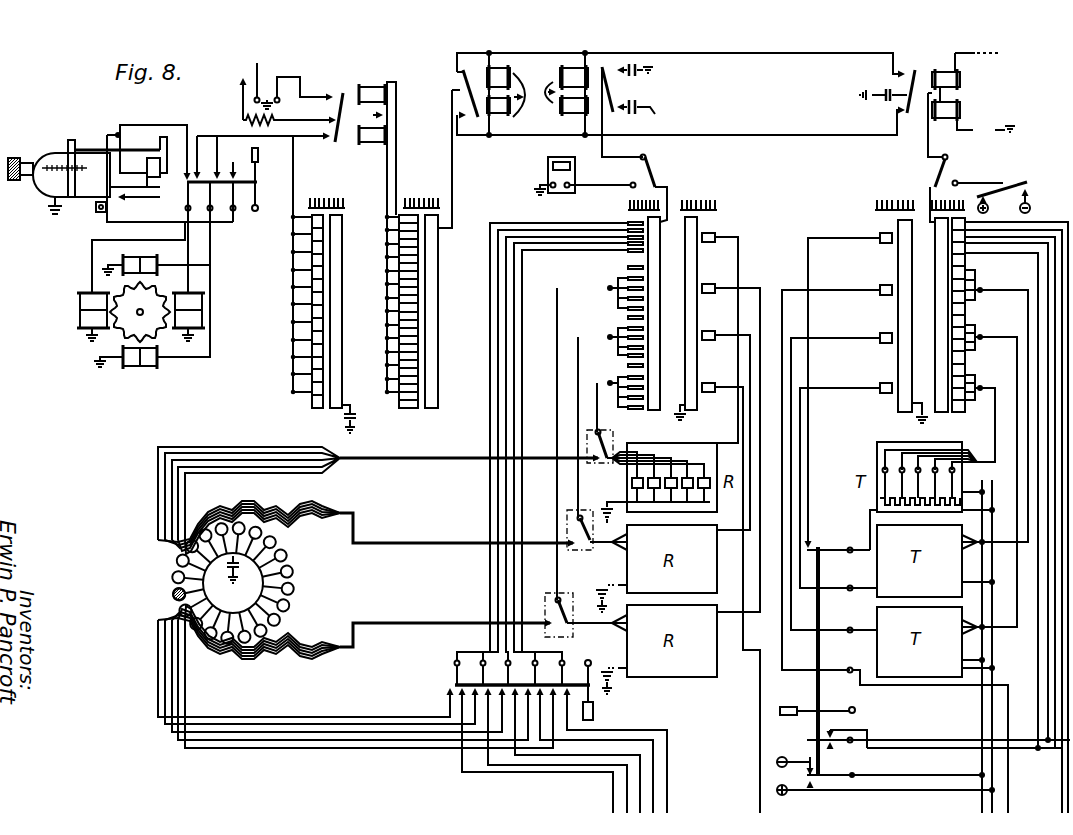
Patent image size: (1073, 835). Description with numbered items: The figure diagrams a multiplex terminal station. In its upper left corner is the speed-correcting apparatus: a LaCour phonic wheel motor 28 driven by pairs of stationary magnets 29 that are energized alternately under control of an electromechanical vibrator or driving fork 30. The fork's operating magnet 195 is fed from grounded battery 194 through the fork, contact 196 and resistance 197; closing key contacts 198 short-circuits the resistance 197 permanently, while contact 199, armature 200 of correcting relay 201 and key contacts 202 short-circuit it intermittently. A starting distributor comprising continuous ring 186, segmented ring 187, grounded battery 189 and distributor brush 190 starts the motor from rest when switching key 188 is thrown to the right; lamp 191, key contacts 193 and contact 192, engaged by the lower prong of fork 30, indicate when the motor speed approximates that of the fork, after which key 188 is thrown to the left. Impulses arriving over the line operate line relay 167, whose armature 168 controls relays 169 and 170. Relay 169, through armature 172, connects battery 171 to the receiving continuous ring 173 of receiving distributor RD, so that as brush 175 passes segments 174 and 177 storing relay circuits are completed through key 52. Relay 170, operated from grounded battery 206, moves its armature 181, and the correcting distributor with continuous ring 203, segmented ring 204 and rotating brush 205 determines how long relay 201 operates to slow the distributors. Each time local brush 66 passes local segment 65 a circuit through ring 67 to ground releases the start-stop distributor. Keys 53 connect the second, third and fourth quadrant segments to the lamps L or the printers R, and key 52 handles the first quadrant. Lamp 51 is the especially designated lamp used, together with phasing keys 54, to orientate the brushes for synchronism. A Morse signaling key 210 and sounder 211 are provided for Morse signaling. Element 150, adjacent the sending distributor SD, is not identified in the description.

The driving fork 30 is at (57, 151).
The contact 192 is at (117, 134).
The contact 196 is at (155, 137).
The resistance 197 is at (245, 121).
The key contacts 198 is at (245, 78).
The key contacts 202 is at (280, 66).
The contact 199 is at (343, 92).
The armature 200 is at (336, 118).
The correcting relay 201 is at (386, 135).
The armature 181 is at (462, 80).
The relay 169 is at (548, 86).
The relay 170 is at (524, 108).
The battery 171 is at (645, 70).
The armature 172 is at (614, 94).
The armature 168 is at (912, 74).
The line relay 167 is at (961, 103).
The grounded battery 206 is at (882, 102).
The sending distributor brushes 150 is at (957, 196).
The Morse signaling key 210 is at (1028, 183).
The sounder 211 is at (548, 168).
The brush 175 is at (653, 182).
The local distributor brush 66 is at (697, 200).
The segment 174 is at (628, 222).
The segment 177 is at (618, 262).
The receiving continuous ring 173 is at (655, 345).
The ring 67 is at (686, 290).
The local segment 65 is at (705, 284).
The distributor brush 190 is at (327, 198).
The rotating brush 205 is at (414, 198).
The continuous ring 186 is at (338, 302).
The segmented ring 187 is at (312, 405).
The switching key 188 is at (258, 181).
The grounded battery 189 is at (358, 420).
The lamp 191 is at (98, 212).
The key contacts 193 is at (242, 176).
The battery 194 is at (48, 210).
The operating magnet 195 is at (147, 180).
The ring 203 is at (438, 398).
The ring 204 is at (410, 409).
The phonic wheel motor 28 is at (140, 312).
The stationary magnets 29 is at (82, 318).
The especially designated lamp 51 is at (172, 594).
The keys 53 is at (585, 517).
The key 52 is at (594, 705).
The phasing keys 54 is at (806, 716).